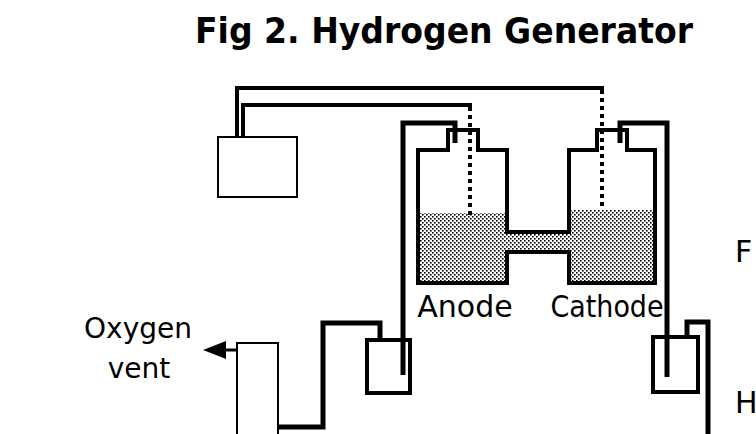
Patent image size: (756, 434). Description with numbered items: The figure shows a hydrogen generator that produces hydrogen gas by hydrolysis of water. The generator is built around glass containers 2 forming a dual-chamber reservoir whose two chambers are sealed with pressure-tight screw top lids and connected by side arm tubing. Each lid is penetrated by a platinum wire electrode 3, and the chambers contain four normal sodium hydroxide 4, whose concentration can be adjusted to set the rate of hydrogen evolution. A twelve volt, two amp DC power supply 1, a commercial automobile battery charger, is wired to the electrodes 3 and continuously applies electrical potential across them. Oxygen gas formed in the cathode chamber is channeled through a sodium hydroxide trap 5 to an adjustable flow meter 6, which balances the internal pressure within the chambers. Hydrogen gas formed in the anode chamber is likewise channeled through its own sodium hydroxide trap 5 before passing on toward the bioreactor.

The DC power supply 1 is at (410, 143).
The glass containers 2 is at (565, 150).
The platinum wire electrodes 3 is at (537, 152).
The sodium hydroxide 4 is at (536, 245).
The sodium hydroxide trap 5 is at (493, 378).
The adjustable flow meter 6 is at (240, 387).